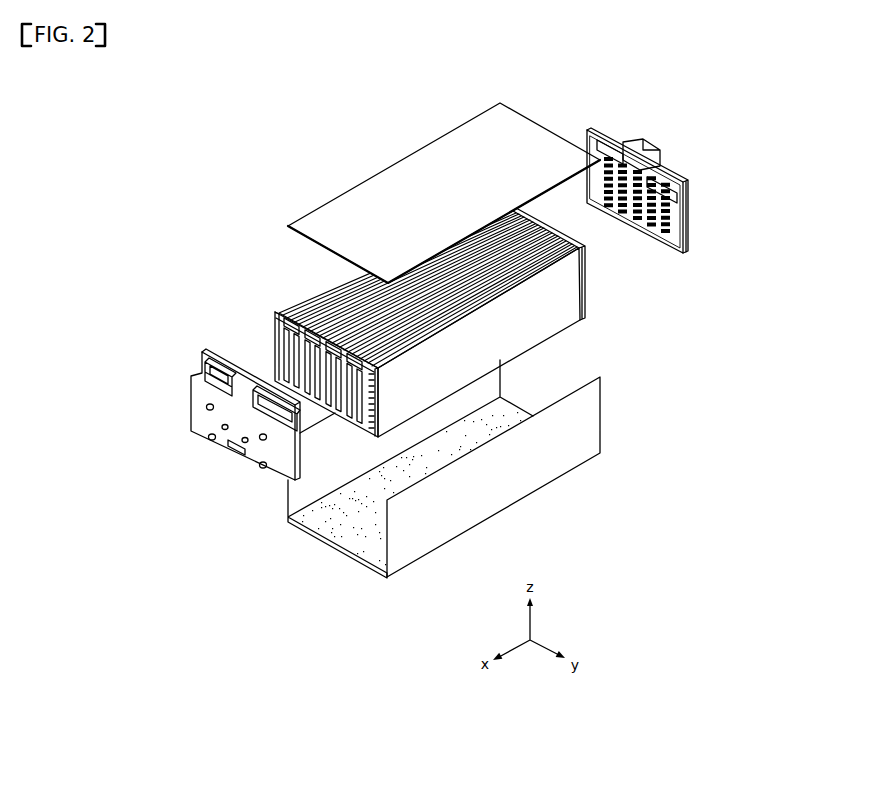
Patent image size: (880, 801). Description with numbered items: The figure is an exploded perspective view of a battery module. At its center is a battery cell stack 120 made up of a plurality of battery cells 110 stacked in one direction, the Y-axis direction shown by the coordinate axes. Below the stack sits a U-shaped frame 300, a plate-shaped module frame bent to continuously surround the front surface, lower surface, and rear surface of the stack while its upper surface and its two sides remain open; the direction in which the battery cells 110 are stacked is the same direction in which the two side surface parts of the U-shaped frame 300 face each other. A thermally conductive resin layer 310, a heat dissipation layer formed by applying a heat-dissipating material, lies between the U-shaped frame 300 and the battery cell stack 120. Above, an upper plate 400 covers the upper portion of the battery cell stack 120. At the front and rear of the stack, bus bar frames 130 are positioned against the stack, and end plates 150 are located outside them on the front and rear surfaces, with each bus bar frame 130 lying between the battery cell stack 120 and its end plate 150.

The battery cell 110 is at (547, 315).
The battery cell stack 120 is at (331, 302).
The bus bar frame 130 is at (262, 337).
The end plate 150 is at (600, 135).
The U-shaped frame 300 is at (513, 480).
The thermally conductive resin layer 310 is at (360, 522).
The upper plate 400 is at (402, 178).